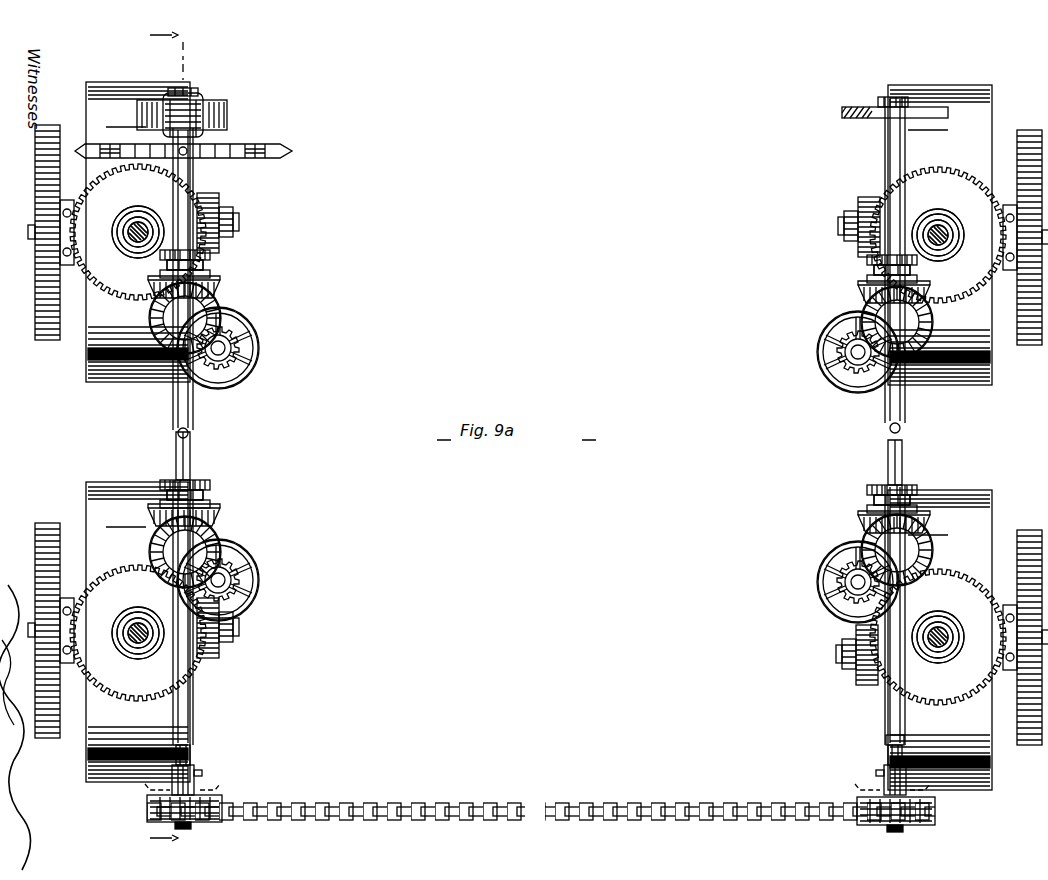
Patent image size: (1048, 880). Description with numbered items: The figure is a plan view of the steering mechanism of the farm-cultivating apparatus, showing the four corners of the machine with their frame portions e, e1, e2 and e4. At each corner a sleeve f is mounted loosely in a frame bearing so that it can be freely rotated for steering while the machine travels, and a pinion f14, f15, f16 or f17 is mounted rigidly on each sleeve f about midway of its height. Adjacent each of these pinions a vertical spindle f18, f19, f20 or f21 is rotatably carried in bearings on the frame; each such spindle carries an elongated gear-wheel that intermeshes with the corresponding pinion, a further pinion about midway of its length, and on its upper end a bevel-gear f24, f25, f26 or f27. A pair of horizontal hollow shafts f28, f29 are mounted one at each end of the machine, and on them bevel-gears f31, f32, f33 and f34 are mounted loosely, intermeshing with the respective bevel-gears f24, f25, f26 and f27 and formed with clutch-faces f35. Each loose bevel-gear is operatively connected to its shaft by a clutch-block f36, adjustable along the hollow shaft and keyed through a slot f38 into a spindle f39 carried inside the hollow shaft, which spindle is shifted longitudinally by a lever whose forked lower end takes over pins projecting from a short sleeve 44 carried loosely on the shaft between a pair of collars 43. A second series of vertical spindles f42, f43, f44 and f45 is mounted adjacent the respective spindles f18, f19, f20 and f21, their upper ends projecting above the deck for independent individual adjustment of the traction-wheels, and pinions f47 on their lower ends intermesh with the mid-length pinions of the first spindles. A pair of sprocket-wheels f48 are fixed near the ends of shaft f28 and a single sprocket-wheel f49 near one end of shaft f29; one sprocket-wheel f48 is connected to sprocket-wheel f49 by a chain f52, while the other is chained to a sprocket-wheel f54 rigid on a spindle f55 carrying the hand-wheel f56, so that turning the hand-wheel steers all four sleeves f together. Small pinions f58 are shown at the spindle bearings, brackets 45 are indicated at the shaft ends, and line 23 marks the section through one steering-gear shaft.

The frame e is at (106, 782).
The frame e1 is at (970, 790).
The frame e2 is at (964, 98).
The frame e4 is at (114, 96).
The sleeve f is at (112, 232).
The pinion f14 is at (100, 596).
The pinion f15 is at (938, 637).
The pinion f16 is at (938, 235).
The pinion f17 is at (100, 268).
The vertical spindle f18 is at (164, 549).
The vertical spindle f19 is at (910, 548).
The vertical spindle f20 is at (945, 332).
The vertical spindle f21 is at (236, 308).
The bevel-gear f24 is at (222, 535).
The bevel-gear f25 is at (866, 536).
The bevel-gear f26 is at (866, 304).
The bevel-gear f27 is at (220, 300).
The horizontal hollow shaft f28 is at (180, 400).
The horizontal hollow shaft f29 is at (885, 406).
The bevel-gear f31 is at (216, 282).
The bevel-gear f32 is at (220, 512).
The bevel-gear f33 is at (866, 516).
The bevel-gear f34 is at (862, 290).
The clutch-face f35 is at (168, 484).
The clutch-block f36 is at (210, 262).
The slot f38 is at (539, 458).
The spindle f39 is at (190, 432).
The vertical spindle f42 is at (222, 580).
The vertical spindle f43 is at (858, 582).
The vertical spindle f44 is at (855, 355).
The vertical spindle f45 is at (222, 348).
The pinion f47 is at (240, 370).
The sprocket-wheel f48 is at (205, 112).
The sprocket-wheel f49 is at (920, 820).
The chain f52 is at (541, 793).
The sprocket-wheel f54 is at (188, 94).
The spindle f55 is at (140, 128).
The hand-wheel f56 is at (292, 151).
The pinion f58 is at (214, 206).
The section line 23 is at (174, 437).
The collar 43 is at (204, 772).
The short sleeve 44 is at (193, 750).
The coupling bracket 45 is at (190, 740).